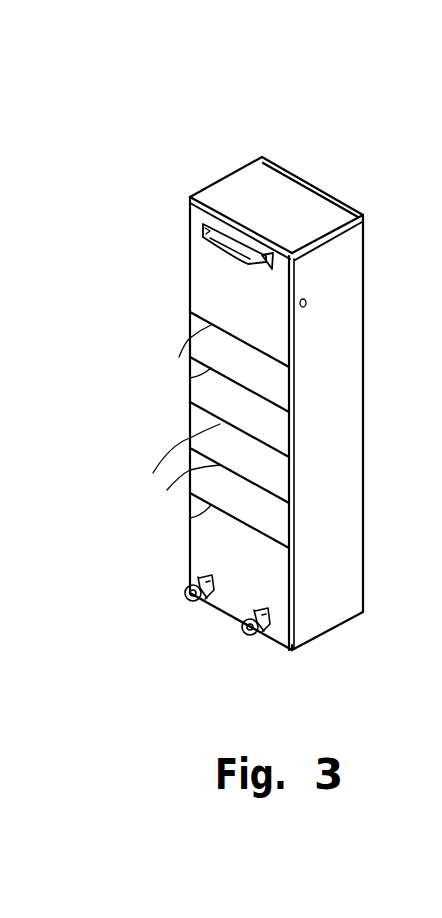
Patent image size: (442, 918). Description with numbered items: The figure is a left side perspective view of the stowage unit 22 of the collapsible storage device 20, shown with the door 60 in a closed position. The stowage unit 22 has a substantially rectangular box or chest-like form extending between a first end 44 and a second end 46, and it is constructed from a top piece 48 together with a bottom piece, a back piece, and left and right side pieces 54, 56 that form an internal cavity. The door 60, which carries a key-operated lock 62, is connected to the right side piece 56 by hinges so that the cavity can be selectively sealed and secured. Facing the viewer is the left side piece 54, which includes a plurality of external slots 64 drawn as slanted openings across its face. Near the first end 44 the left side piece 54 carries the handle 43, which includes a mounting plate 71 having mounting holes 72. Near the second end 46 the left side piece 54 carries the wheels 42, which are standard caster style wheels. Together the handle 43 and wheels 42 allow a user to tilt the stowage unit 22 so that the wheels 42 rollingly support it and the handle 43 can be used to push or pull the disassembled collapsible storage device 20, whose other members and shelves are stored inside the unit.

The collapsible storage device 20 is at (248, 135).
The stowage unit 22 is at (186, 288).
The wheels 42 is at (242, 634).
The handle 43 is at (210, 254).
The first end 44 is at (287, 213).
The second end 46 is at (187, 560).
The top piece 48 is at (243, 195).
The left side piece 54 is at (273, 577).
The right side piece 56 is at (287, 168).
The door 60 is at (338, 475).
The lock 62 is at (308, 303).
The external slots 64 is at (190, 378).
The mounting plate 71 is at (212, 190).
The mounting holes 72 is at (189, 210).